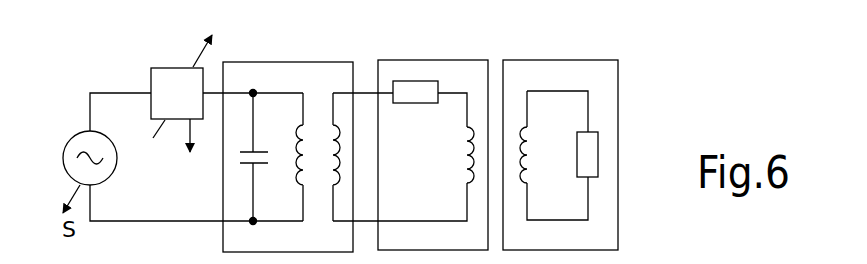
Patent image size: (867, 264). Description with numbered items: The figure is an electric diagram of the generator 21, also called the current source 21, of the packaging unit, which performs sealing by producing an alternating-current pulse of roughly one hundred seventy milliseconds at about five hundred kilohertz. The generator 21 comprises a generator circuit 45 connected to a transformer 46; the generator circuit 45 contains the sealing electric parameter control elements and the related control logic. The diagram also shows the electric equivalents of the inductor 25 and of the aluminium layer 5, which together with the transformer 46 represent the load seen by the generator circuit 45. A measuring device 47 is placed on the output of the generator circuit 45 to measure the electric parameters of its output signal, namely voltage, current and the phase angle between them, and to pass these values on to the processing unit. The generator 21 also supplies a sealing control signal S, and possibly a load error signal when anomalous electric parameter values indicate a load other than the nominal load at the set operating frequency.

The generator circuit 45 is at (76, 143).
The measuring device 47 is at (168, 80).
The transformer 46 is at (282, 72).
The inductor 25 is at (419, 70).
The aluminium layer 5 is at (541, 70).
The generator 21 is at (603, 136).